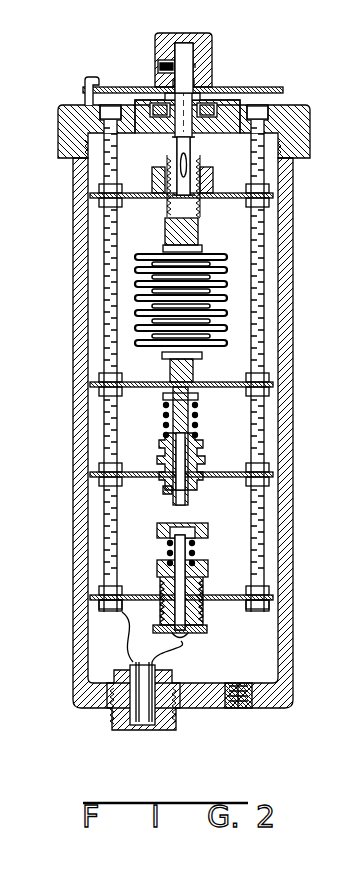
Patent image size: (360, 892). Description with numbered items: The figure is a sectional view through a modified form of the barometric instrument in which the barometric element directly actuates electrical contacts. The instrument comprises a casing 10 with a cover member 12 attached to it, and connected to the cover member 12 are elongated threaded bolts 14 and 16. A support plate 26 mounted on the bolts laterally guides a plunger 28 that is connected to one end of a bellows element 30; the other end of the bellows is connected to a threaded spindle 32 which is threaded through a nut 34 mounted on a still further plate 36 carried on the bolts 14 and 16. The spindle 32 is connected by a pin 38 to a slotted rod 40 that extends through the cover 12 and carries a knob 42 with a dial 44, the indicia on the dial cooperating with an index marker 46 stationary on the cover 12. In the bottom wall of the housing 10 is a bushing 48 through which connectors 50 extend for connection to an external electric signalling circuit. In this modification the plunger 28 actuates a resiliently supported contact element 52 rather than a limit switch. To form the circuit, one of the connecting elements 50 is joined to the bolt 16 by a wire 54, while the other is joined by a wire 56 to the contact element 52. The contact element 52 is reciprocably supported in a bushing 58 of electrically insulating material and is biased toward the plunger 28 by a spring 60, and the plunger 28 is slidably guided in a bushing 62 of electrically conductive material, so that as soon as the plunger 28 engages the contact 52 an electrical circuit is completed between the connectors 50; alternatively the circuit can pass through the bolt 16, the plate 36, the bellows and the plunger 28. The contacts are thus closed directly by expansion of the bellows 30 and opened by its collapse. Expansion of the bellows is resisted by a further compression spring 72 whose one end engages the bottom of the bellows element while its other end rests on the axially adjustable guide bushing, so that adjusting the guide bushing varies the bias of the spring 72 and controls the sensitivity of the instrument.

The casing 10 is at (288, 348).
The cover member 12 is at (302, 136).
The elongated threaded bolt 14 is at (262, 282).
The elongated threaded bolt 16 is at (104, 276).
The support plate 26 is at (269, 385).
The plunger 28 is at (176, 430).
The bellows element 30 is at (228, 332).
The threaded spindle 32 is at (198, 212).
The nut 34 is at (208, 180).
The plate 36 is at (271, 200).
The pin 38 is at (176, 149).
The slotted rod 40 is at (191, 70).
The knob 42 is at (212, 42).
The dial 44 is at (133, 87).
The index marker 46 is at (88, 78).
The bushing 48 is at (178, 733).
The connectors 50 is at (138, 732).
The contact element 52 is at (196, 522).
The wire 54 is at (126, 638).
The wire 56 is at (185, 644).
The bushing 58 is at (206, 568).
The spring 60 is at (169, 547).
The bushing 62 is at (170, 491).
The compression spring 72 is at (196, 413).